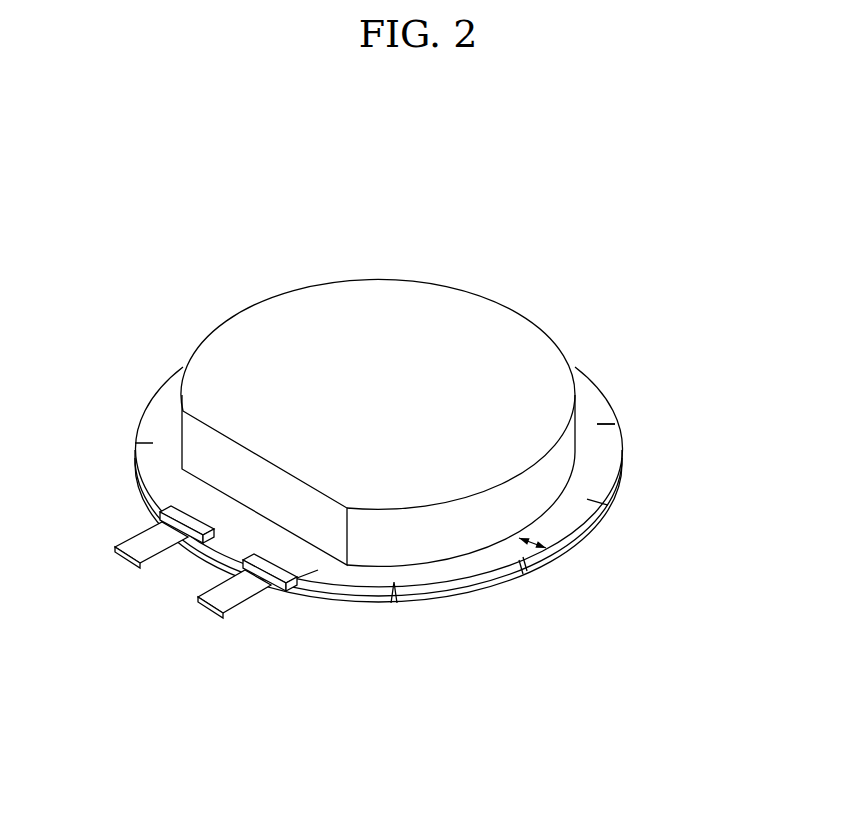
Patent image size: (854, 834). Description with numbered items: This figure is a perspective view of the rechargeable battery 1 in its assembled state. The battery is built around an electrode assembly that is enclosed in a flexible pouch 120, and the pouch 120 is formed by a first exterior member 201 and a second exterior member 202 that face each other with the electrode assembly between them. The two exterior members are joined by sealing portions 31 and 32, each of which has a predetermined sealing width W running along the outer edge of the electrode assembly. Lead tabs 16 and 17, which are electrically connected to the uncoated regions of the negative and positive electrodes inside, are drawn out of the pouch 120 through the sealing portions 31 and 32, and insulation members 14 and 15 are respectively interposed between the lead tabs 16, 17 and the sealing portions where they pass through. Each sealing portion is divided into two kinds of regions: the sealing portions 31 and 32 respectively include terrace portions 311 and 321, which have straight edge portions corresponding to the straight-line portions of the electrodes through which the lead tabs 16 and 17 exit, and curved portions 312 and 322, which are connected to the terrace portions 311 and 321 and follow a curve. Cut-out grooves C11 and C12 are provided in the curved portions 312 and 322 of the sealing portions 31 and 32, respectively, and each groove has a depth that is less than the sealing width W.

The rechargeable battery 1 is at (386, 215).
The insulation member 14 is at (176, 522).
The insulation member 15 is at (258, 565).
The lead tab 16 is at (122, 552).
The lead tab 17 is at (215, 600).
The pouch 120 is at (705, 312).
The first exterior member 201 is at (527, 310).
The second exterior member 202 is at (451, 609).
The sealing portion 31 is at (558, 705).
The terrace portion 311 is at (298, 577).
The curved portion 312 is at (597, 473).
The sealing portion 32 is at (683, 705).
The terrace portion 321 is at (314, 598).
The curved portion 322 is at (614, 500).
The sealing width W is at (542, 546).
The cut-out groove C11 is at (535, 570).
The cut-out groove C12 is at (533, 580).